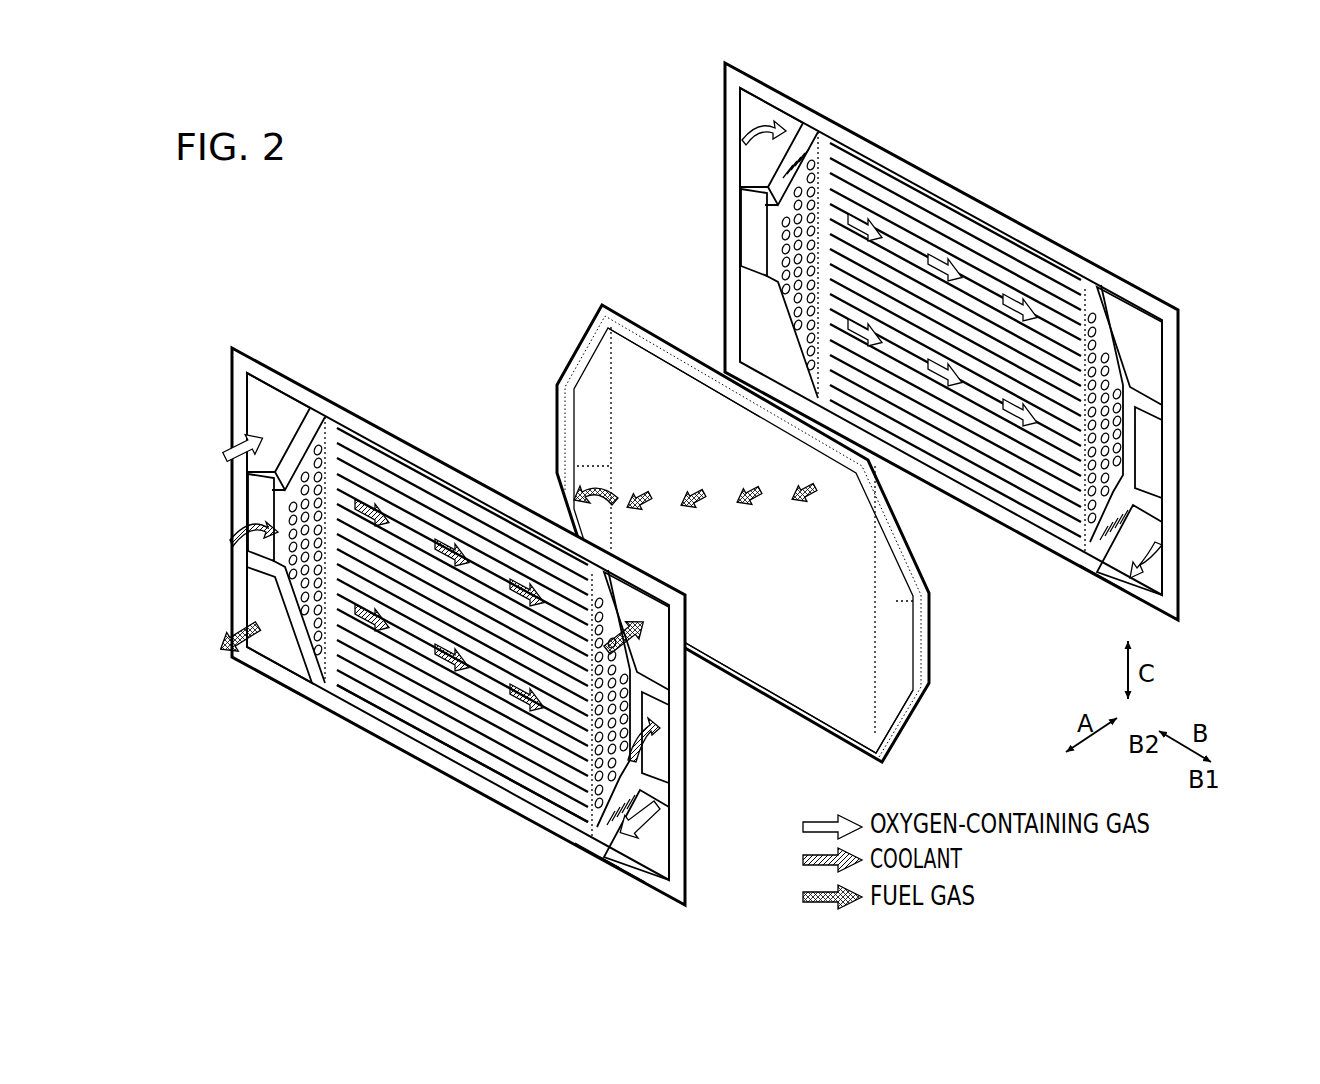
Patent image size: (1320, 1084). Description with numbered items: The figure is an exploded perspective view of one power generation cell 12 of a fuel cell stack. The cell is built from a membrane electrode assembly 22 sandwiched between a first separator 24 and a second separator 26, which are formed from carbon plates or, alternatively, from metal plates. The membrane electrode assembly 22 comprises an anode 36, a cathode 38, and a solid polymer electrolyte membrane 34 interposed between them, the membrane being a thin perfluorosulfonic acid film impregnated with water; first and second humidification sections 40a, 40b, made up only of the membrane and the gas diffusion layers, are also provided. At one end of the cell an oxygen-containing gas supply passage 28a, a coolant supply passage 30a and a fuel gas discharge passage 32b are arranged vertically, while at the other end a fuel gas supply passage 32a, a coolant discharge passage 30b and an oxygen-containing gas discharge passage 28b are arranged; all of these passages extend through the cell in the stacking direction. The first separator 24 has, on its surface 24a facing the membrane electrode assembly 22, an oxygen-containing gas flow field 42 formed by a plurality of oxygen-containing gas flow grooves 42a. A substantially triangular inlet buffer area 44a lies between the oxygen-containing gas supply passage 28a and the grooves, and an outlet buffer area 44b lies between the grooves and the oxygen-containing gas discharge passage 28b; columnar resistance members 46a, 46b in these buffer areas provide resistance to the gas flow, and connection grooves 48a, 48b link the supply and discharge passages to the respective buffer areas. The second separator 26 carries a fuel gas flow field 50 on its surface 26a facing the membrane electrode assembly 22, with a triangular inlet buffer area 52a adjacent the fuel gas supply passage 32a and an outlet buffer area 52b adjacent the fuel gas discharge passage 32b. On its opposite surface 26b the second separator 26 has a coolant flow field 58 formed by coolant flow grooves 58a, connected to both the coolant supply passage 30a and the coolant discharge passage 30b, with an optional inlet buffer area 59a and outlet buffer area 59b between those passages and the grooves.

The power generation cell 12 is at (467, 217).
The membrane electrode assembly 22 is at (597, 305).
The first separator 24 is at (722, 128).
The surface of first separator 24a is at (1093, 578).
The second separator 26 is at (229, 347).
The surface of second separator 26a is at (291, 690).
The surface of second separator 26b is at (284, 670).
The oxygen-containing gas supply passage 28a is at (262, 411).
The oxygen-containing gas discharge passage 28b is at (660, 838).
The coolant supply passage 30a is at (252, 528).
The coolant discharge passage 30b is at (660, 756).
The fuel gas supply passage 32a is at (662, 652).
The fuel gas discharge passage 32b is at (262, 605).
The solid polymer electrolyte membrane 34 is at (566, 388).
The anode 36 is at (802, 668).
The cathode 38 is at (698, 360).
The first humidification section 40a is at (608, 466).
The second humidification section 40b is at (905, 603).
The oxygen-containing gas flow field 42 is at (938, 189).
The oxygen-containing gas flow grooves 42a is at (905, 228).
The inlet buffer area 44a is at (784, 219).
The outlet buffer area 44b is at (1121, 404).
The columnar resistance members 46a is at (782, 240).
The columnar resistance members 46b is at (1140, 437).
The connection grooves 48a is at (762, 150).
The connection grooves 48b is at (1125, 556).
The fuel gas flow field 50 is at (408, 706).
The inlet buffer area 52a is at (640, 701).
The outlet buffer area 52b is at (275, 492).
The coolant flow field 58 is at (447, 480).
The coolant flow grooves 58a is at (412, 517).
The inlet buffer area 59a is at (275, 567).
The outlet buffer area 59b is at (640, 770).